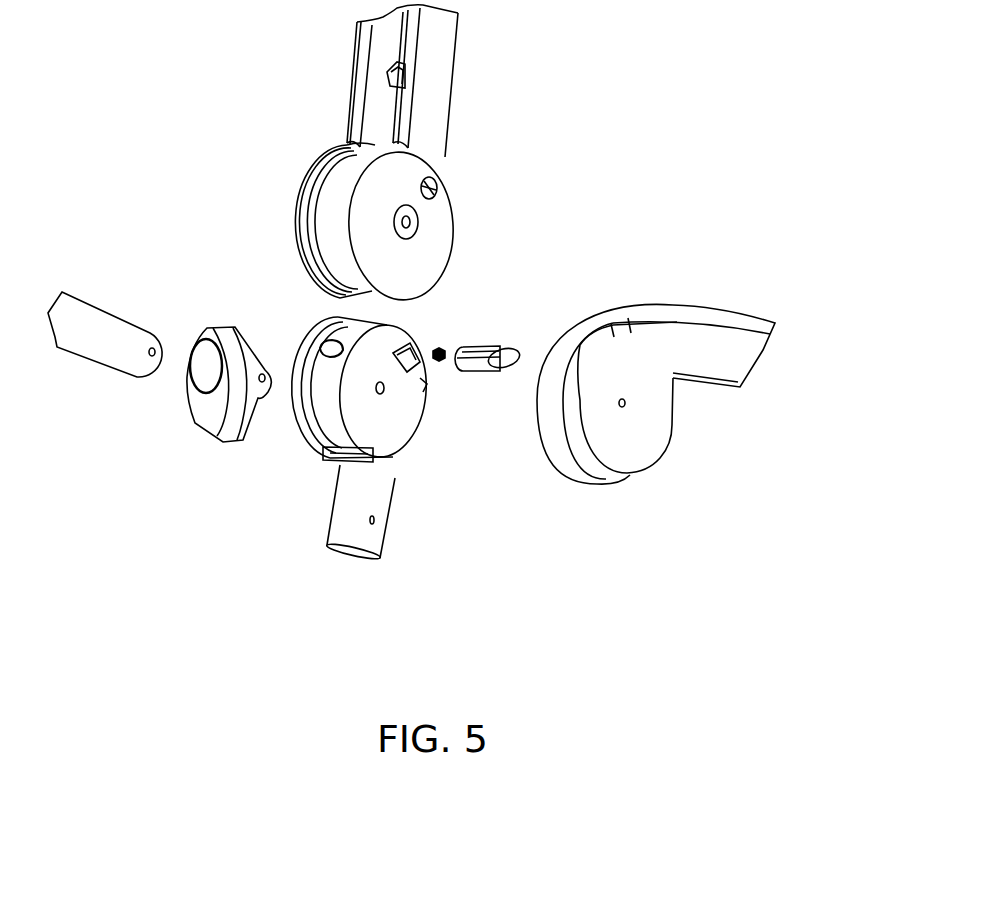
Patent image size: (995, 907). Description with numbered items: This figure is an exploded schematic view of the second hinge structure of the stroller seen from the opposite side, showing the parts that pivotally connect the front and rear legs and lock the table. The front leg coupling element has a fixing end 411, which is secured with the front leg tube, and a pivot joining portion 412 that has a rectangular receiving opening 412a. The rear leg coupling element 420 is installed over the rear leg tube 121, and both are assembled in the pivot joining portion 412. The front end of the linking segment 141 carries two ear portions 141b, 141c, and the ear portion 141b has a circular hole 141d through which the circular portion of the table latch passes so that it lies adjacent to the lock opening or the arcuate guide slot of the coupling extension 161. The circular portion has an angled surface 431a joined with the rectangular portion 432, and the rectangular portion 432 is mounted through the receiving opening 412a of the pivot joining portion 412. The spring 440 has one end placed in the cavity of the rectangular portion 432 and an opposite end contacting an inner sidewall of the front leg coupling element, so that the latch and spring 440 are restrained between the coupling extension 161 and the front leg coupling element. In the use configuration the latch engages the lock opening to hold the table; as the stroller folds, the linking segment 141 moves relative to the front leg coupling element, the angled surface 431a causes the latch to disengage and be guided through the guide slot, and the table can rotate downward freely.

The linking segment 141 is at (430, 107).
The ear portion 141b is at (432, 248).
The ear portion 141c is at (295, 208).
The circular hole 141d is at (432, 185).
The rear leg tube 121 is at (112, 352).
The rear leg coupling element 420 is at (210, 412).
The fixing end 411 is at (345, 492).
The pivot joining portion 412 is at (393, 433).
The rectangular receiving opening 412a is at (428, 385).
The spring 440 is at (443, 351).
The rectangular portion 432 is at (480, 372).
The angled surface 431a is at (510, 350).
The coupling extension 161 is at (647, 397).